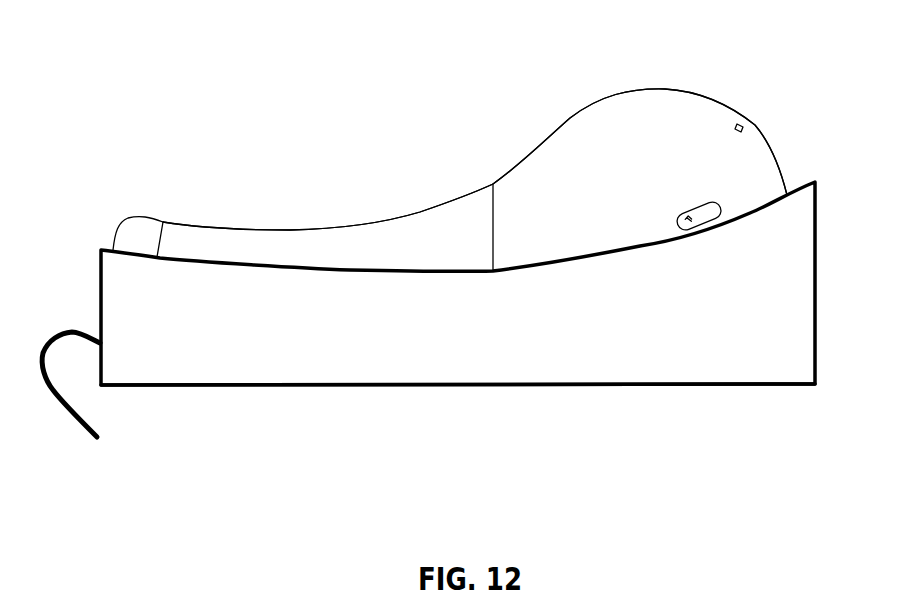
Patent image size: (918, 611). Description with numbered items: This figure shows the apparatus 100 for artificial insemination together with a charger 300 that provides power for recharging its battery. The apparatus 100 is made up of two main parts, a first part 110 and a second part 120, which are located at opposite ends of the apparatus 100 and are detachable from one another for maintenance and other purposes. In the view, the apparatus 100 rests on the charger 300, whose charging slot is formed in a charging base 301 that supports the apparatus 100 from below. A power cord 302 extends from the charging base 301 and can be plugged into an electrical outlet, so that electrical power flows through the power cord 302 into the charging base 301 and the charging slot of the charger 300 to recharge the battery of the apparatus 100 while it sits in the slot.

The apparatus 100 is at (372, 142).
The first part 110 is at (223, 237).
The second part 120 is at (653, 133).
The charger 300 is at (832, 262).
The charging base 301 is at (492, 353).
The power cord 302 is at (98, 437).